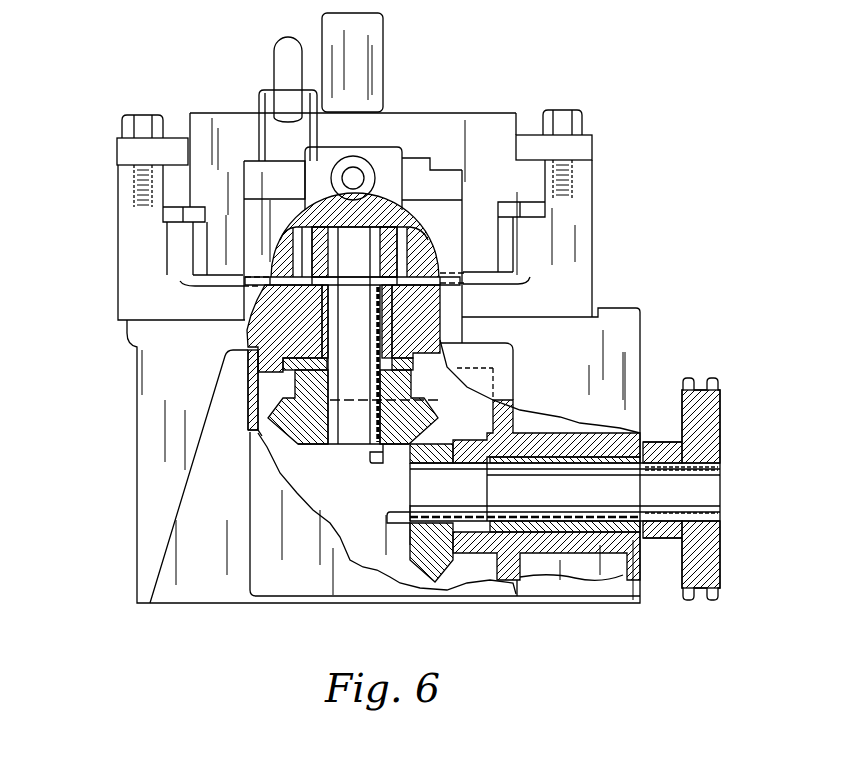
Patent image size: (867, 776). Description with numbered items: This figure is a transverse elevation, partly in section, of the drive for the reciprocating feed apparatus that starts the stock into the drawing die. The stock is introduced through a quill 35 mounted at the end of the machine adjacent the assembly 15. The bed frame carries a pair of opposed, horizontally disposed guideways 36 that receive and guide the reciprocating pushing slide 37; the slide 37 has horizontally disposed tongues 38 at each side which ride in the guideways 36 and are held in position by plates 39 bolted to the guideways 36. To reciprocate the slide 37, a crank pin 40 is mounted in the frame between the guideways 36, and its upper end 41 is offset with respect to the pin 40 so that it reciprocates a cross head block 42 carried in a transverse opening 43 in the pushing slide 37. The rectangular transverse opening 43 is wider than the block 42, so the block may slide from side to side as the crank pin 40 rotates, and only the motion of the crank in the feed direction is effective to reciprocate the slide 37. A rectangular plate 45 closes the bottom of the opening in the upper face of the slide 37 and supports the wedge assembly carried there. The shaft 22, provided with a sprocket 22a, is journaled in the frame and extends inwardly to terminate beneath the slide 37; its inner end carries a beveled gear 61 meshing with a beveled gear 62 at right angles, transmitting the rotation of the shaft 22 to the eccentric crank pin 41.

The assembly 15 is at (505, 110).
The shaft 22 is at (553, 501).
The sprocket 22a is at (712, 428).
The quill 35 is at (355, 162).
The guideways 36 is at (133, 243).
The pushing slide 37 is at (450, 123).
The tongues 38 is at (197, 199).
The plates 39 is at (122, 150).
The crank pin 40 is at (356, 330).
The eccentric crank pin 41 is at (358, 260).
The cross head block 42 is at (318, 238).
The transverse opening 43 is at (302, 241).
The rectangular plate 45 is at (409, 212).
The beveled gear 61 is at (412, 464).
The beveled gear 62 is at (312, 440).